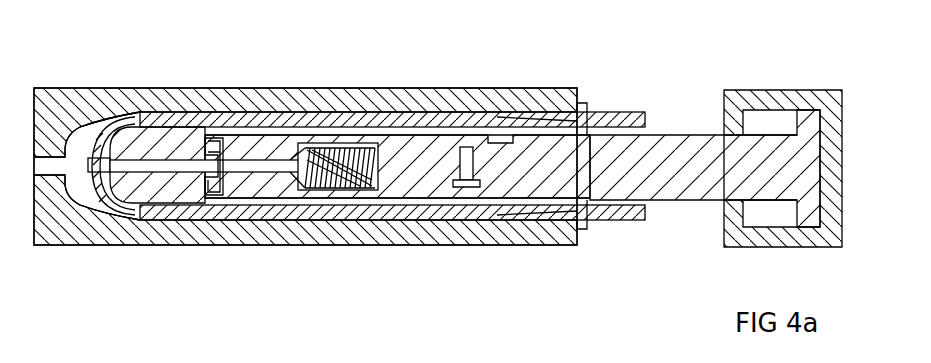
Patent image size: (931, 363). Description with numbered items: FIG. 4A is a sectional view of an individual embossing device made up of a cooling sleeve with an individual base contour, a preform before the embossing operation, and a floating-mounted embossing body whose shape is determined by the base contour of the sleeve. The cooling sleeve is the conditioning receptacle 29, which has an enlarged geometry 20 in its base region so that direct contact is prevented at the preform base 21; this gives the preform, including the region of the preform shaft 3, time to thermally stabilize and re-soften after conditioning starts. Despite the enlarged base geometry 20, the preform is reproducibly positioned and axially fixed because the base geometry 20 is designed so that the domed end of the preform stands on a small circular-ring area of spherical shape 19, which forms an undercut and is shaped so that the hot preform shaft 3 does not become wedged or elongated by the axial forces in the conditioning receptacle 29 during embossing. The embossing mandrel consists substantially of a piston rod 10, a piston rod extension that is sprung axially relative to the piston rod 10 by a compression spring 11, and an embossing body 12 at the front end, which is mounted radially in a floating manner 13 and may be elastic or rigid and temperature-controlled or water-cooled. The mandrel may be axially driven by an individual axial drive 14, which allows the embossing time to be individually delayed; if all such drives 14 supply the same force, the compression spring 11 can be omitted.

The preform shaft 3 is at (252, 117).
The piston rod 10 is at (677, 167).
The compression spring 11 is at (352, 165).
The embossing body 12 is at (155, 183).
The floating mounting 13 is at (218, 193).
The individual axial drive 14 is at (778, 235).
The circular-ring area of spherical shape 19 is at (130, 117).
The enlarged base geometry 20 is at (97, 135).
The preform base 21 is at (113, 128).
The conditioning receptacle 29 is at (395, 98).